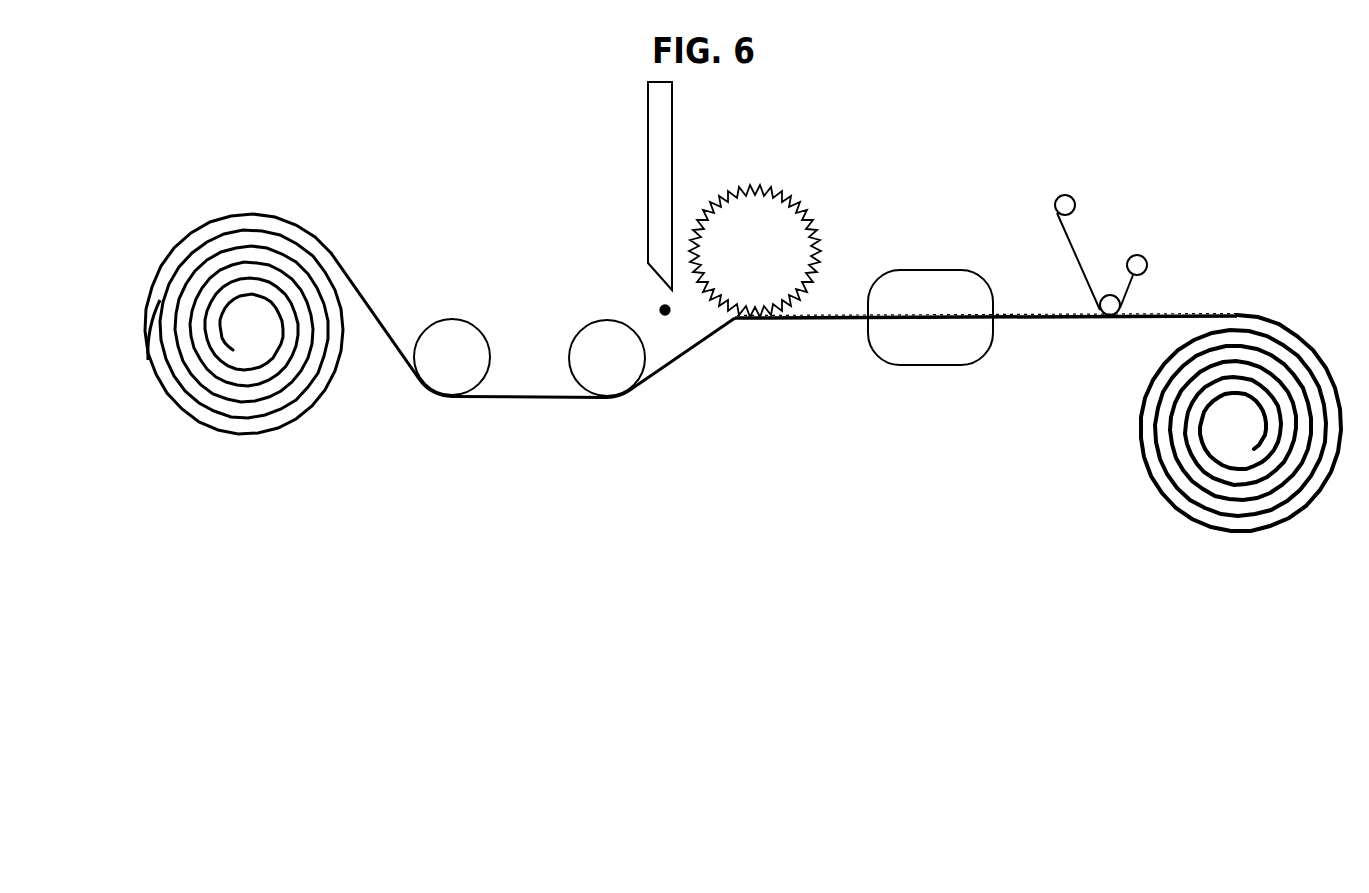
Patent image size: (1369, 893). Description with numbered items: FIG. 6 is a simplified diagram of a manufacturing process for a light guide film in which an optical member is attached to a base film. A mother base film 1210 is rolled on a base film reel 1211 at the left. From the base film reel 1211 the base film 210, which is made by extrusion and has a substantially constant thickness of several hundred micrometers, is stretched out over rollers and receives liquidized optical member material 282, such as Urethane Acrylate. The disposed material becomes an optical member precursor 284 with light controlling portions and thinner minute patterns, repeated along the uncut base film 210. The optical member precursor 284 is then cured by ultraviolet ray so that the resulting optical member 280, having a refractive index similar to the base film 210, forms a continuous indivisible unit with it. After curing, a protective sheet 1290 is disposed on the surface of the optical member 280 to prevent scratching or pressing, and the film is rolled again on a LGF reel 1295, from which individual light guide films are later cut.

The base film 210 is at (385, 337).
The optical member 280 is at (1008, 315).
The optical member material 282 is at (665, 315).
The optical member precursor 284 is at (845, 315).
The mother base film 1210 is at (242, 433).
The base film reel 1211 is at (148, 365).
The protective sheet 1290 is at (1137, 263).
The LGF reel 1295 is at (1282, 340).